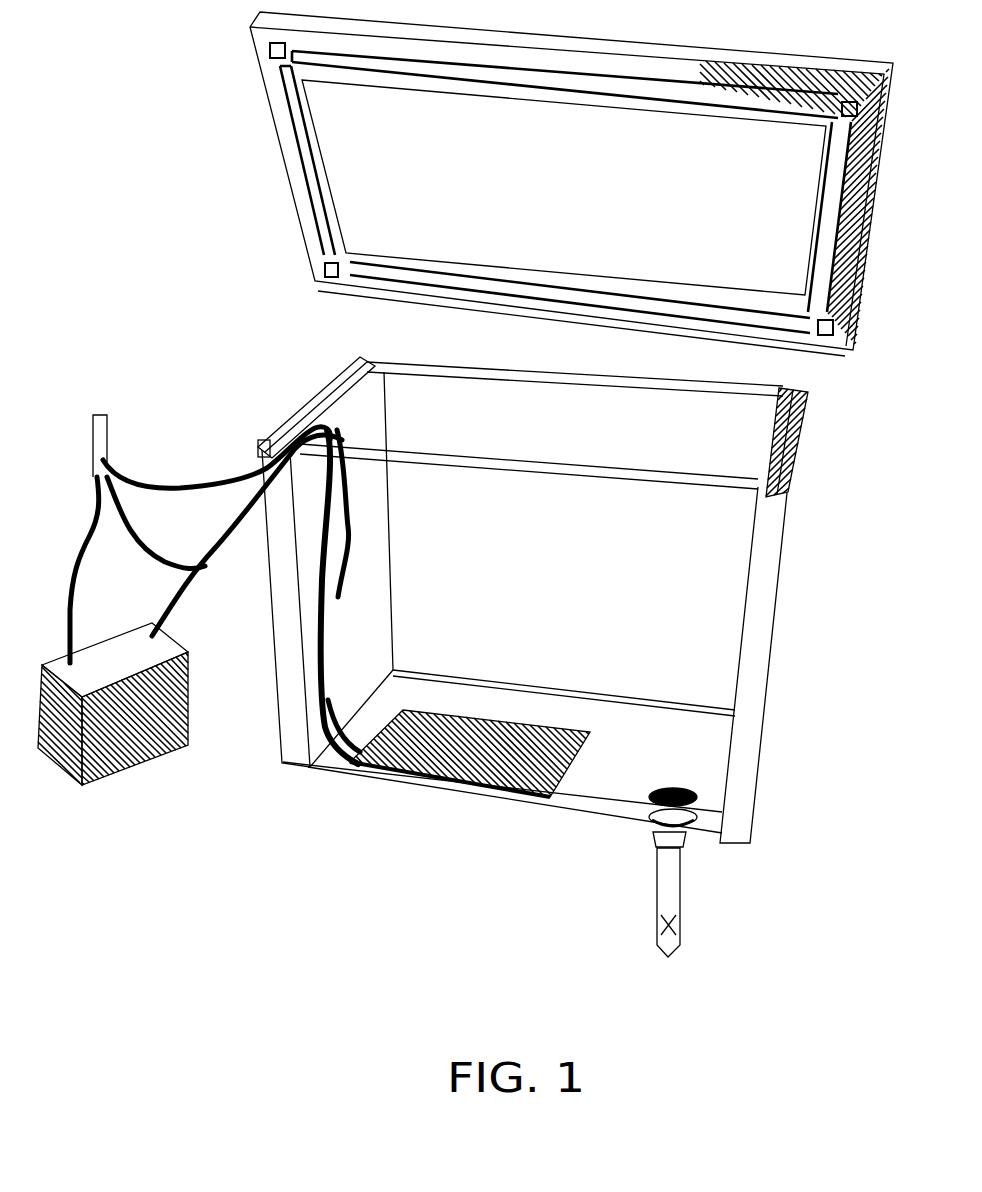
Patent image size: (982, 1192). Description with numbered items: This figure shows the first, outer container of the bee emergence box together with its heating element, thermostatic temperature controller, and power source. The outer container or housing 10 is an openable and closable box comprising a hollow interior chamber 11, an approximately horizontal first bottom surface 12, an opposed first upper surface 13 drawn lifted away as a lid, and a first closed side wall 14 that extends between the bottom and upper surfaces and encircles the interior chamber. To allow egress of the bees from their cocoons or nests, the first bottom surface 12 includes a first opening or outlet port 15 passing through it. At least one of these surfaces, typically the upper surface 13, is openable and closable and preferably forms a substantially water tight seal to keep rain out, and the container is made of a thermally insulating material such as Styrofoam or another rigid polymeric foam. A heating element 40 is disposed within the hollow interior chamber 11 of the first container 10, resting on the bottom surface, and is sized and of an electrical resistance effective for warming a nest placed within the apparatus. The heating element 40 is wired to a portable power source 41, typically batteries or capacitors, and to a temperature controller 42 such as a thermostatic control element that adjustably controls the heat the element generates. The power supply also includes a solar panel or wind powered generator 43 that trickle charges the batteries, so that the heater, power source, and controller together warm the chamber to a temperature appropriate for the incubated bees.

The outer container 10 is at (284, 870).
The hollow interior chamber 11 is at (477, 417).
The first bottom surface 12 is at (608, 770).
The first upper surface 13 is at (283, 152).
The first closed side wall 14 is at (776, 607).
The outlet port 15 is at (705, 800).
The heating element 40 is at (470, 753).
The power source 41 is at (42, 654).
The temperature controller 42 is at (182, 484).
The solar panel or wind powered generator 43 is at (96, 411).